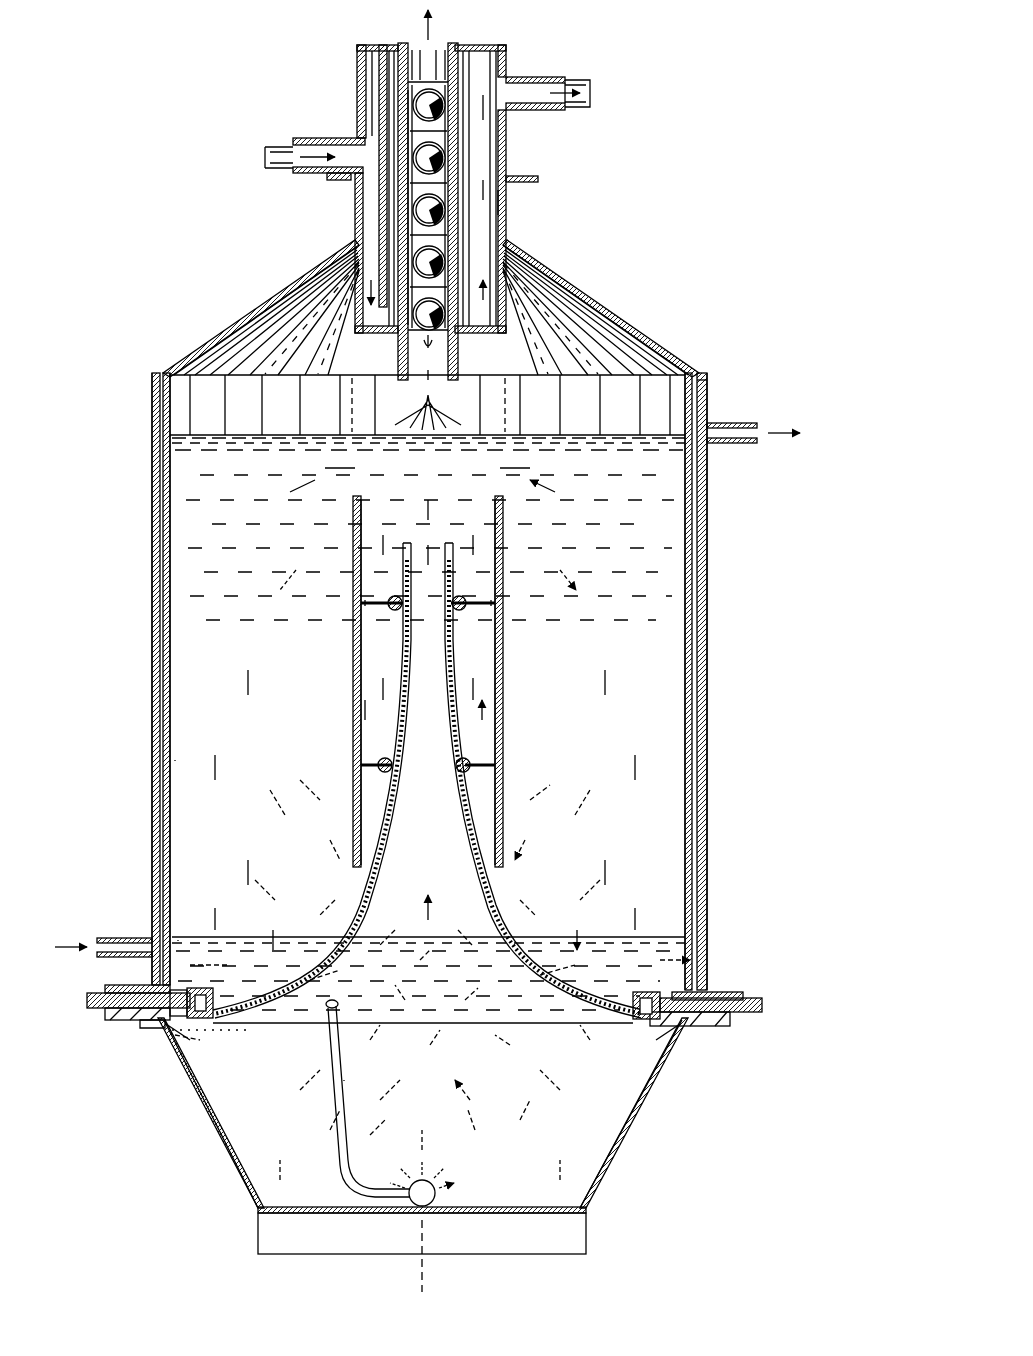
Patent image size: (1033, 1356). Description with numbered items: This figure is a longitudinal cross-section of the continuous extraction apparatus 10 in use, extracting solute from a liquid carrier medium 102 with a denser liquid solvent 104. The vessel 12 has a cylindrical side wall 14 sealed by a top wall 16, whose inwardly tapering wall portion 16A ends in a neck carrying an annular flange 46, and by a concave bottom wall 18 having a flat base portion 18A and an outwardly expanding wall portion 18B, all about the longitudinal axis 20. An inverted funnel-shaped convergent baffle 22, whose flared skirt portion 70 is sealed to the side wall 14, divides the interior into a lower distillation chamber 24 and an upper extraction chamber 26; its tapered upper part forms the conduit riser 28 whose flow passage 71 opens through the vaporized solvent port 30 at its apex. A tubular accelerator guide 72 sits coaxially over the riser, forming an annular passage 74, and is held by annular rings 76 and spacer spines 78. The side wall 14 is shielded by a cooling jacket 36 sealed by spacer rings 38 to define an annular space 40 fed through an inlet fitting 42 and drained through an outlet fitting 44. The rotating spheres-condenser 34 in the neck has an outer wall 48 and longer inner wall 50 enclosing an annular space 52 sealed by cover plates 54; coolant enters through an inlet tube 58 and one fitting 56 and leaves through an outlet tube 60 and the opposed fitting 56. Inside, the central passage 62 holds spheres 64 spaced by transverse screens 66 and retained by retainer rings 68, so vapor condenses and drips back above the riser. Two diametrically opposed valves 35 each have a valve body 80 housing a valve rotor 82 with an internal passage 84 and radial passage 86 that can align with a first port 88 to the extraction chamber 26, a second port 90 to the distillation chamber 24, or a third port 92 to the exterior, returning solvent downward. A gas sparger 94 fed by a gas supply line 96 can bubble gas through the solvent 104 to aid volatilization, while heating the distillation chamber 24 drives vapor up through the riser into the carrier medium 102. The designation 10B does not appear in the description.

The continuous extraction apparatus 10 is at (167, 86).
The collar 10B is at (512, 203).
The vessel 12 is at (180, 352).
The cylindrical side wall 14 is at (165, 478).
The top wall 16 is at (600, 303).
The inwardly tapering wall portion 16A is at (622, 322).
The bottom wall 18 is at (613, 1178).
The flat base portion 18A is at (509, 1213).
The outwardly expanding wall portion 18B is at (636, 1122).
The longitudinal axis 20 is at (425, 1278).
The convergent baffle 22 is at (560, 918).
The distillation chamber 24 is at (335, 1130).
The extraction chamber 26 is at (583, 720).
The conduit riser 28 is at (503, 633).
The vaporized solvent port 30 is at (503, 513).
The rotating spheres-condenser 34 is at (522, 69).
The valve 35 is at (739, 986).
The cooling jacket 36 is at (160, 614).
The annular spacer ring 38 is at (706, 385).
The annular space 40 is at (160, 586).
The inlet fitting 42 is at (121, 938).
The outlet fitting 44 is at (728, 425).
The annular flange 46 is at (530, 177).
The outer wall 48 is at (362, 84).
The inner wall 50 is at (458, 62).
The annular space 52 is at (376, 117).
The annular cover plate 54 is at (375, 46).
The inlet and outlet fitting 56 is at (552, 112).
The inlet tube 58 is at (263, 168).
The outlet tube 60 is at (586, 79).
The central passage 62 is at (436, 58).
The sphere 64 is at (450, 235).
The transverse screen 66 is at (506, 189).
The retainer ring 68 is at (412, 46).
The skirt portion 70 is at (375, 900).
The flow passage 71 is at (330, 680).
The accelerator guide 72 is at (503, 594).
The annular passage 74 is at (370, 707).
The annular ring 76 is at (495, 565).
The spacer spine 78 is at (388, 600).
The valve body 80 is at (700, 990).
The valve rotor 82 is at (753, 1000).
The internal passage 84 is at (96, 1012).
The radial passage 86 is at (179, 1042).
The first port 88 is at (695, 987).
The second port 90 is at (191, 1070).
The third port 92 is at (143, 1022).
The gas sparger 94 is at (411, 1213).
The gas supply line 96 is at (341, 1166).
The liquid carrier medium 102 is at (270, 462).
The liquid solvent 104 is at (187, 950).